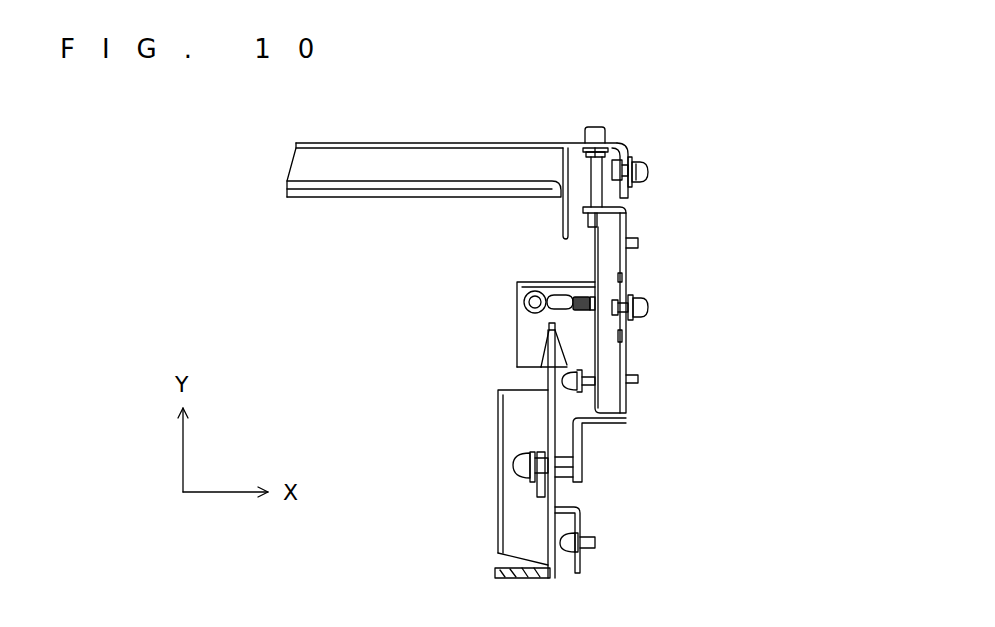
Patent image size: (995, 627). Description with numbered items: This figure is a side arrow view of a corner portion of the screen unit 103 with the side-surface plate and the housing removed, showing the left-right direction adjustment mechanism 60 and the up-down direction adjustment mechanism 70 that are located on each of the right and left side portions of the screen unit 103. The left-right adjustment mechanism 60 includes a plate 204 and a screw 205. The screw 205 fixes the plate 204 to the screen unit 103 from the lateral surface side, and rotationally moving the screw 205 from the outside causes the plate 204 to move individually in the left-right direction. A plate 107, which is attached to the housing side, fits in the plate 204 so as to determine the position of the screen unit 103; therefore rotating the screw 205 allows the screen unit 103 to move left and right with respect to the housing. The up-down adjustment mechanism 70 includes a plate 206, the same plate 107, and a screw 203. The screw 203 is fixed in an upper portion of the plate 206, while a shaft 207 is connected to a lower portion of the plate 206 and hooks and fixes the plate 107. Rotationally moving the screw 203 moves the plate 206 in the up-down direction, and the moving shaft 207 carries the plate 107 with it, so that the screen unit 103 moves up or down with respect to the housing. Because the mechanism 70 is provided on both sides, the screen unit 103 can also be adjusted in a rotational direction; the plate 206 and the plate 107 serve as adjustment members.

The screen unit 103 is at (512, 143).
The screw 203 is at (597, 127).
The up-down direction adjustment mechanism 70 is at (645, 133).
The left-right direction adjustment mechanism 60 is at (655, 280).
The screw 205 is at (650, 306).
The plate 204 is at (566, 338).
The plate 107 is at (510, 425).
The shaft 207 is at (520, 478).
The plate 206 is at (609, 410).